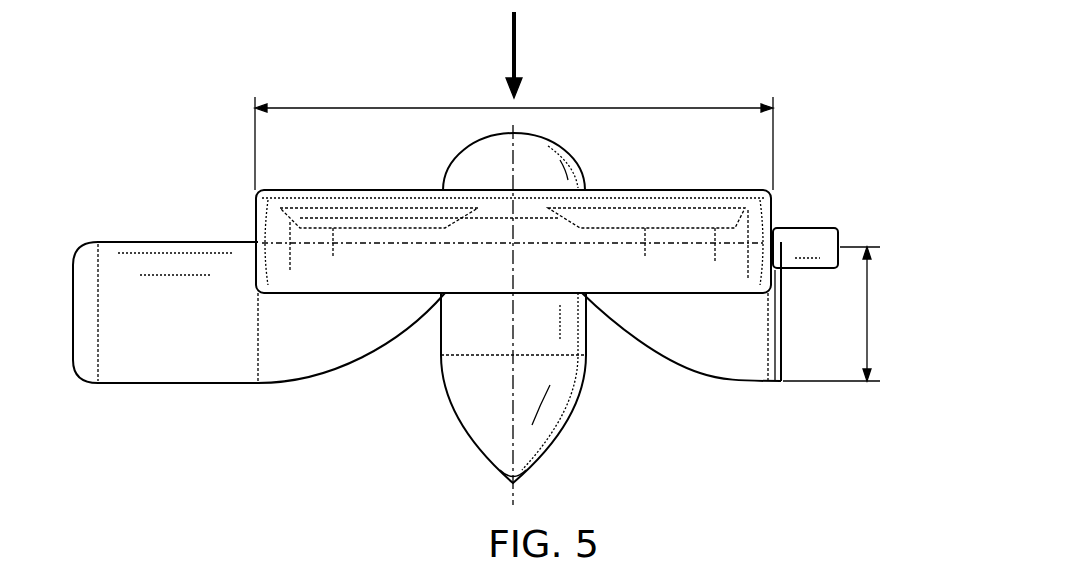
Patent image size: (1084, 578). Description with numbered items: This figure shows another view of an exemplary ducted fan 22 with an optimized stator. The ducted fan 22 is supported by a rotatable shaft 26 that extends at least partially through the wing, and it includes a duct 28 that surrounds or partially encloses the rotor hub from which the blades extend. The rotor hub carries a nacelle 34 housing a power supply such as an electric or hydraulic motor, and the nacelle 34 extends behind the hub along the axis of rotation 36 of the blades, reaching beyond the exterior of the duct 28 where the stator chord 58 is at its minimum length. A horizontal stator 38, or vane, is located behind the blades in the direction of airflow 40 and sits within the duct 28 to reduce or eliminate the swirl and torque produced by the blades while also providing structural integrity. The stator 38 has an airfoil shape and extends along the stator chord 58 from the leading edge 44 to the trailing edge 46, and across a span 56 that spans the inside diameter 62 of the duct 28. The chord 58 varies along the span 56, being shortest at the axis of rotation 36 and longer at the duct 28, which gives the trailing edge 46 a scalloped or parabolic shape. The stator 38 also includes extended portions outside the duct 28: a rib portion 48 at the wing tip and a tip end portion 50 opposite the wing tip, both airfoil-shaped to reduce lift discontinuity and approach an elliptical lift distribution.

The ducted fan 22 is at (215, 127).
The rotatable shaft 26 is at (800, 228).
The duct 28 is at (690, 190).
The nacelle 34 is at (455, 412).
The axis of rotation 36 is at (525, 498).
The horizontal stator 38 is at (697, 374).
The direction of airflow 40 is at (517, 52).
The leading edge 44 is at (178, 242).
The trailing edge 46 is at (333, 375).
The rib portion 48 is at (784, 312).
The tip end portion 50 is at (168, 386).
The span 56 is at (514, 123).
The stator chord 58 is at (870, 315).
The inside diameter 62 is at (470, 108).